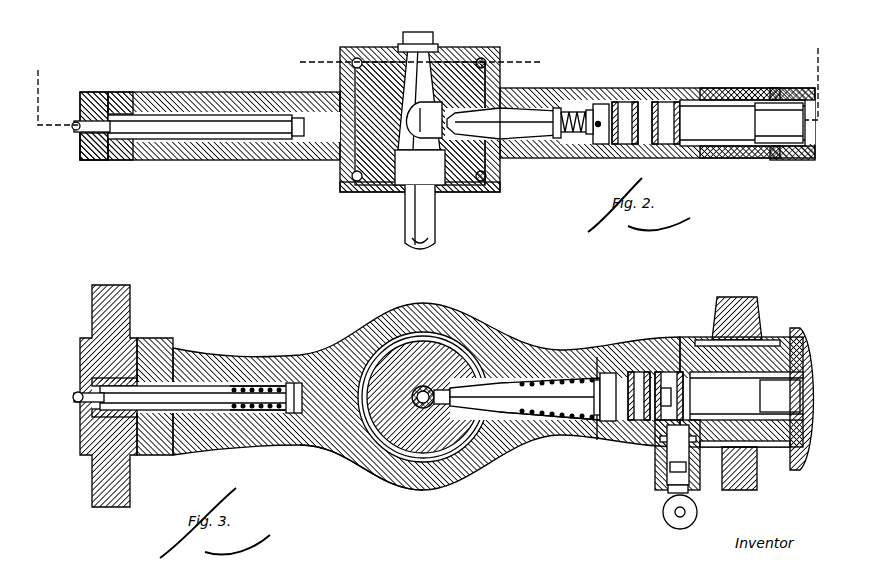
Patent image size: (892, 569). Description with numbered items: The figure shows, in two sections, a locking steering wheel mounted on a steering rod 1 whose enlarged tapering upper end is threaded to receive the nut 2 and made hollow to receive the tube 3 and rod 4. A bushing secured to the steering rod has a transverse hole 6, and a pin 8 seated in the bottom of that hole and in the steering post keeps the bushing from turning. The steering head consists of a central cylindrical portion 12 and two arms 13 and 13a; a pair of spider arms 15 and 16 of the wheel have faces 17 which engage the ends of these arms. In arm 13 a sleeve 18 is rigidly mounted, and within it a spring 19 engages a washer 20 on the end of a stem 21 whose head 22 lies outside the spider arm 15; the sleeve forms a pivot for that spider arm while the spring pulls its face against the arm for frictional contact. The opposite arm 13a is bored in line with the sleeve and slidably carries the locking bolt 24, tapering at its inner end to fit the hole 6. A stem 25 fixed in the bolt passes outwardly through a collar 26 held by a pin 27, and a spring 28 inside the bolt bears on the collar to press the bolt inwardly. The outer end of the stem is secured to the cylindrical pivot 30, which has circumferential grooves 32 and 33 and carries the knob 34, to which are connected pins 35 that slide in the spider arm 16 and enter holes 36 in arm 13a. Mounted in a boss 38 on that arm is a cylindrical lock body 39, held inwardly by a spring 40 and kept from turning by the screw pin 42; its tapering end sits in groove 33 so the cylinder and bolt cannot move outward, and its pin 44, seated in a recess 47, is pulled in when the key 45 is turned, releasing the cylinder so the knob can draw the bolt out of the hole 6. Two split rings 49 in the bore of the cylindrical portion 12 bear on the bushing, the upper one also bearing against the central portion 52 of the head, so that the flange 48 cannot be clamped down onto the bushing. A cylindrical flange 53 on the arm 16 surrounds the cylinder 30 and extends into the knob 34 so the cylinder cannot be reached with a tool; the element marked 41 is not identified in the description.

In FIG. 2, the steering rod 1 is at (437, 212).
In FIG. 3, the steering rod 1 is at (348, 455).
In FIG. 2, the nut 2 is at (430, 50).
In FIG. 2, the tube 3 is at (410, 244).
In FIG. 3, the tube 3 is at (447, 372).
In FIG. 2, the rod 4 is at (418, 33).
In FIG. 3, the rod 4 is at (448, 460).
In FIG. 2, the transverse hole 6 is at (486, 76).
In FIG. 3, the transverse hole 6 is at (458, 355).
In FIG. 2, the pin 8 is at (422, 138).
In FIG. 3, the pin 8 is at (465, 420).
In FIG. 2, the central cylindrical portion 12 is at (340, 74).
In FIG. 2, the arm 13 is at (198, 96).
In FIG. 3, the arm 13 is at (230, 358).
In FIG. 2, the arm 13a is at (668, 90).
In FIG. 3, the arm 13a is at (590, 437).
In FIG. 2, the spider arm 15 is at (95, 93).
In FIG. 3, the spider arm 15 is at (94, 313).
In FIG. 2, the spider arm 16 is at (735, 90).
In FIG. 3, the spider arm 16 is at (738, 297).
In FIG. 2, the face 17 is at (118, 160).
In FIG. 3, the face 17 is at (137, 355).
In FIG. 2, the sleeve 18 is at (206, 125).
In FIG. 3, the sleeve 18 is at (190, 410).
In FIG. 3, the spring 19 is at (250, 410).
In FIG. 3, the washer 20 is at (292, 382).
In FIG. 2, the stem 21 is at (80, 150).
In FIG. 3, the stem 21 is at (170, 340).
In FIG. 2, the head 22 is at (78, 128).
In FIG. 3, the head 22 is at (78, 400).
In FIG. 2, the locking bolt 24 is at (520, 130).
In FIG. 3, the locking bolt 24 is at (505, 383).
In FIG. 2, the stem 25 is at (560, 138).
In FIG. 3, the stem 25 is at (545, 414).
In FIG. 2, the collar 26 is at (598, 104).
In FIG. 3, the collar 26 is at (605, 420).
In FIG. 2, the pin 27 is at (594, 145).
In FIG. 3, the pin 27 is at (597, 360).
In FIG. 2, the spring 28 is at (570, 106).
In FIG. 3, the spring 28 is at (560, 380).
In FIG. 2, the cylindrical pivot 30 is at (742, 123).
In FIG. 3, the cylindrical pivot 30 is at (746, 396).
In FIG. 2, the circumferential groove 32 is at (632, 132).
In FIG. 3, the circumferential groove 32 is at (637, 372).
In FIG. 2, the circumferential groove 33 is at (672, 132).
In FIG. 3, the circumferential groove 33 is at (668, 372).
In FIG. 2, the knob 34 is at (786, 160).
In FIG. 3, the knob 34 is at (798, 335).
In FIG. 3, the pins 35 is at (762, 335).
In FIG. 3, the holes 36 is at (700, 341).
In FIG. 3, the boss 38 is at (655, 488).
In FIG. 3, the lock body 39 is at (670, 492).
In FIG. 3, the spring 40 is at (662, 470).
In FIG. 3, the passage 41 is at (673, 394).
In FIG. 3, the screw pin 42 is at (698, 500).
In FIG. 3, the pin 44 is at (660, 440).
In FIG. 3, the key 45 is at (668, 516).
In FIG. 3, the recess 47 is at (662, 455).
In FIG. 2, the flange 48 is at (342, 190).
In FIG. 2, the split rings 49 is at (357, 58).
In FIG. 2, the central portion 52 is at (464, 48).
In FIG. 2, the cylindrical flange 53 is at (779, 123).
In FIG. 3, the cylindrical flange 53 is at (780, 396).